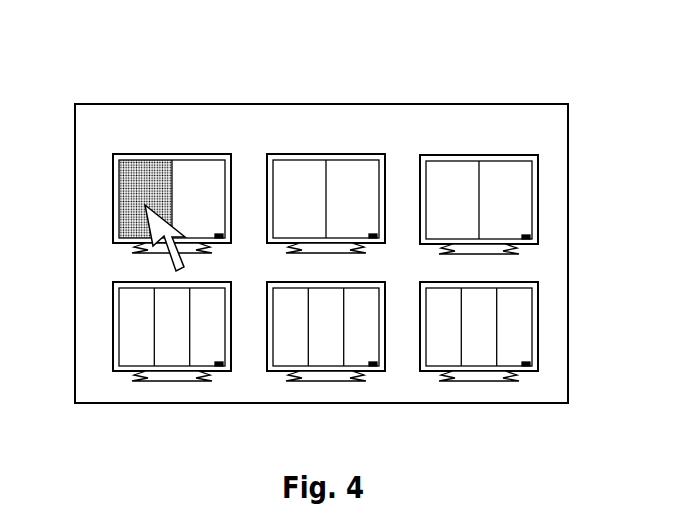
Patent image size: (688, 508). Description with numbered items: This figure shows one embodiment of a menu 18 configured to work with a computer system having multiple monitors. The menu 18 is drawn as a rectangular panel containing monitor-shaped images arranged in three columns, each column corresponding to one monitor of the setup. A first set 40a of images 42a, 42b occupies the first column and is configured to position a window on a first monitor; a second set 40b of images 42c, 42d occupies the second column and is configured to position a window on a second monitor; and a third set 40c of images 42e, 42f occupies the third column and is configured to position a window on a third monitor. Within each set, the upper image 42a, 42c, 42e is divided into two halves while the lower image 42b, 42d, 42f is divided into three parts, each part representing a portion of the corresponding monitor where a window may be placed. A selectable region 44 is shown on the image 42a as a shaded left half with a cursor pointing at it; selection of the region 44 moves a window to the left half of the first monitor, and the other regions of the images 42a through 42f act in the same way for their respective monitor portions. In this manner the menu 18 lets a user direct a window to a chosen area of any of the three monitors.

The menu 18 is at (543, 262).
The first set 40a is at (165, 78).
The second set 40b is at (325, 78).
The third set 40c is at (480, 78).
The image 42a is at (198, 158).
The image 42b is at (183, 371).
The image 42c is at (356, 158).
The image 42d is at (338, 371).
The image 42e is at (508, 158).
The image 42f is at (490, 371).
The region 44 is at (142, 187).